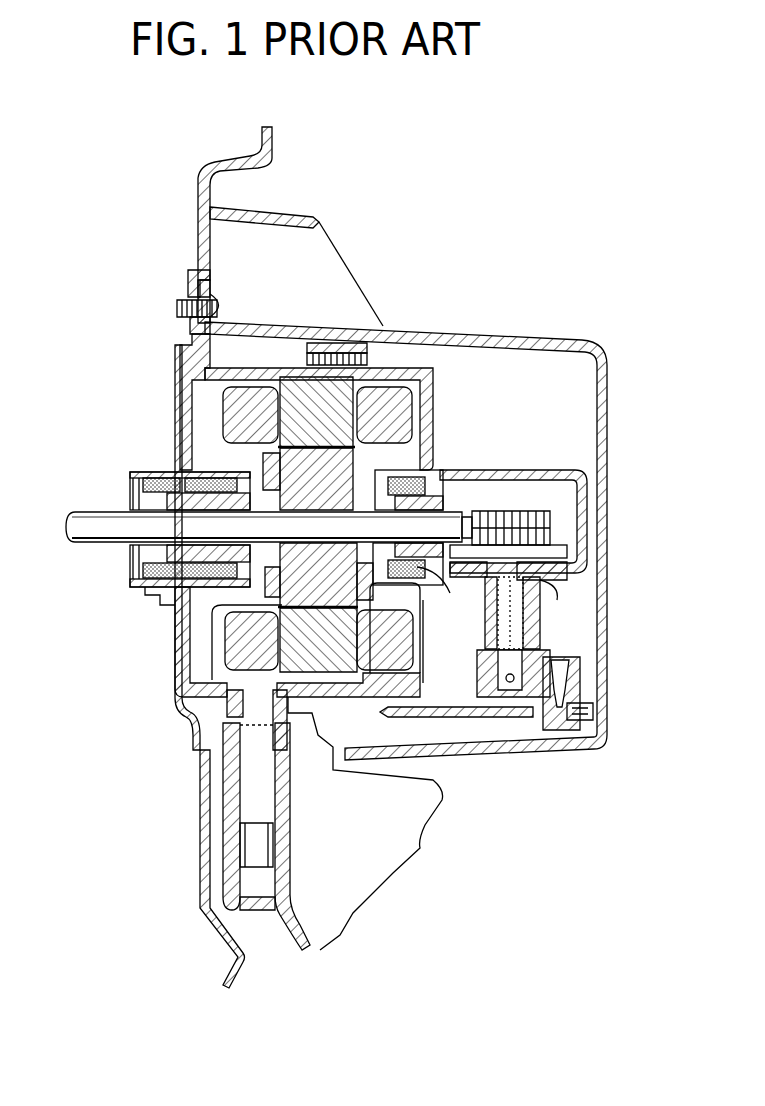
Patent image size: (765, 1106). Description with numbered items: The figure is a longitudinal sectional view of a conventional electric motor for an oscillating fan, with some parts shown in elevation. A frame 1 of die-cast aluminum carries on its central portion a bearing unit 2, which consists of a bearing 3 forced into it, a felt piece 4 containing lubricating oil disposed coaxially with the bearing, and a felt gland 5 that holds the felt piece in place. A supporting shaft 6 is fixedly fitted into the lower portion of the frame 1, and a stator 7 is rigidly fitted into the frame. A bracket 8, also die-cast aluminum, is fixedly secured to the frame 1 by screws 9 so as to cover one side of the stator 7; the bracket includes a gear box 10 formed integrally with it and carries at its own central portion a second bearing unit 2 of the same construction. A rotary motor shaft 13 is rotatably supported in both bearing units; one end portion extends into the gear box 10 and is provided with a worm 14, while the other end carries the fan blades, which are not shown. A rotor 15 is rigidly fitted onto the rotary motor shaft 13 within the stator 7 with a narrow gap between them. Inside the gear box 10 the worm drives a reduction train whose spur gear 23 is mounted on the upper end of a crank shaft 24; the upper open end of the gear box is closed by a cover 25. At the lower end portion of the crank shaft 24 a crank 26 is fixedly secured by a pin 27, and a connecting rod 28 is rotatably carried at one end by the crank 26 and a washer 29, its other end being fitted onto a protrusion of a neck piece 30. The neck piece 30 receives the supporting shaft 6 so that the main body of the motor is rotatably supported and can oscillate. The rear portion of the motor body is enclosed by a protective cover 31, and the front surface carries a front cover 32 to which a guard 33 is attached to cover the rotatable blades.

The frame 1 is at (195, 365).
The bearing unit 2 is at (195, 478).
The bearing 3 is at (200, 497).
The felt piece 4 is at (428, 478).
The felt gland 5 is at (403, 450).
The supporting shaft 6 is at (246, 792).
The stator 7 is at (372, 368).
The bracket 8 is at (431, 376).
The screws 9 is at (345, 405).
The gear box 10 is at (566, 550).
The rotary motor shaft 13 is at (96, 518).
The worm 14 is at (548, 523).
The rotor 15 is at (262, 606).
The spur gear 23 is at (549, 575).
The crank shaft 24 is at (539, 630).
The cover 25 is at (509, 472).
The crank 26 is at (577, 692).
The pin 27 is at (490, 684).
The connecting rod 28 is at (522, 718).
The washer 29 is at (579, 722).
The neck piece 30 is at (390, 858).
The protective cover 31 is at (571, 350).
The front cover 32 is at (179, 396).
The guard 33 is at (268, 141).